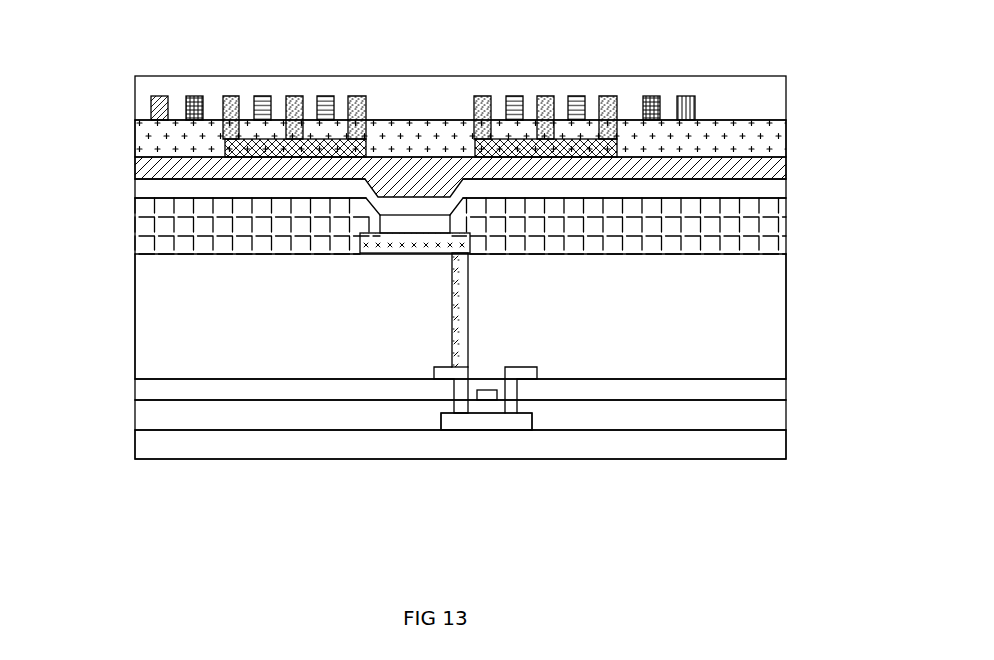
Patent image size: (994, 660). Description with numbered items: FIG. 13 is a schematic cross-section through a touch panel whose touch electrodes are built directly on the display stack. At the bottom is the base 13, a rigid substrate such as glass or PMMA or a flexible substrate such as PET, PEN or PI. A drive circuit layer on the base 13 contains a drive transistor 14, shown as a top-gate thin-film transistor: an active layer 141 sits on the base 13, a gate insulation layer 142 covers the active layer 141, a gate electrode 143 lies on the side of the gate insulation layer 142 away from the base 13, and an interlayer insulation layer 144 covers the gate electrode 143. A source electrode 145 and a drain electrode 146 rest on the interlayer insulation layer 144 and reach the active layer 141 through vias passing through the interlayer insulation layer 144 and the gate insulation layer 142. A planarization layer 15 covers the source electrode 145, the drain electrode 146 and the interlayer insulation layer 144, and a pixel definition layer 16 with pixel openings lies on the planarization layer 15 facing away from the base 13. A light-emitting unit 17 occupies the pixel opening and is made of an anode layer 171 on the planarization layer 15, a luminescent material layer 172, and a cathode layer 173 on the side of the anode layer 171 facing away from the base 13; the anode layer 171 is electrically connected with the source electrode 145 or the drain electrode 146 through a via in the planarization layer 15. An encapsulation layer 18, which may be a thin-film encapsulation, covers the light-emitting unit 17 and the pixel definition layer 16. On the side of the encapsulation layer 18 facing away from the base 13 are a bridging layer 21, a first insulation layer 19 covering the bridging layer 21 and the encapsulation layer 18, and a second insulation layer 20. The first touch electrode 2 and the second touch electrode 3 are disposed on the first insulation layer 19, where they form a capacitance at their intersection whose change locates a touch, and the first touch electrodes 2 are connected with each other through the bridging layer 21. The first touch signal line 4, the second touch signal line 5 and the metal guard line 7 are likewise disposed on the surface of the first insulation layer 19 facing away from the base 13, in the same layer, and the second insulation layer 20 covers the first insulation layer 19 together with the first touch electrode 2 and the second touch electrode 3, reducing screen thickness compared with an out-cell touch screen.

The first touch electrode 2 is at (235, 97).
The second touch electrode 3 is at (330, 97).
The first touch signal line 4 is at (688, 97).
The second touch signal line 5 is at (151, 104).
The guard line 7 is at (192, 97).
The base 13 is at (243, 448).
The drive transistor 14 is at (400, 500).
The active layer 141 is at (453, 422).
The gate insulation layer 142 is at (570, 417).
The gate electrode 143 is at (487, 400).
The interlayer insulation layer 144 is at (597, 392).
The source electrode 145 is at (452, 375).
The drain electrode 146 is at (512, 407).
The planarization layer 15 is at (327, 362).
The pixel definition layer 16 is at (767, 225).
The light-emitting unit 17 is at (82, 273).
The anode layer 171 is at (420, 250).
The luminescent material layer 172 is at (397, 222).
The cathode layer 173 is at (142, 187).
The encapsulation layer 18 is at (780, 167).
The first insulation layer 19 is at (773, 130).
The second insulation layer 20 is at (770, 92).
The bridging layer 21 is at (225, 147).